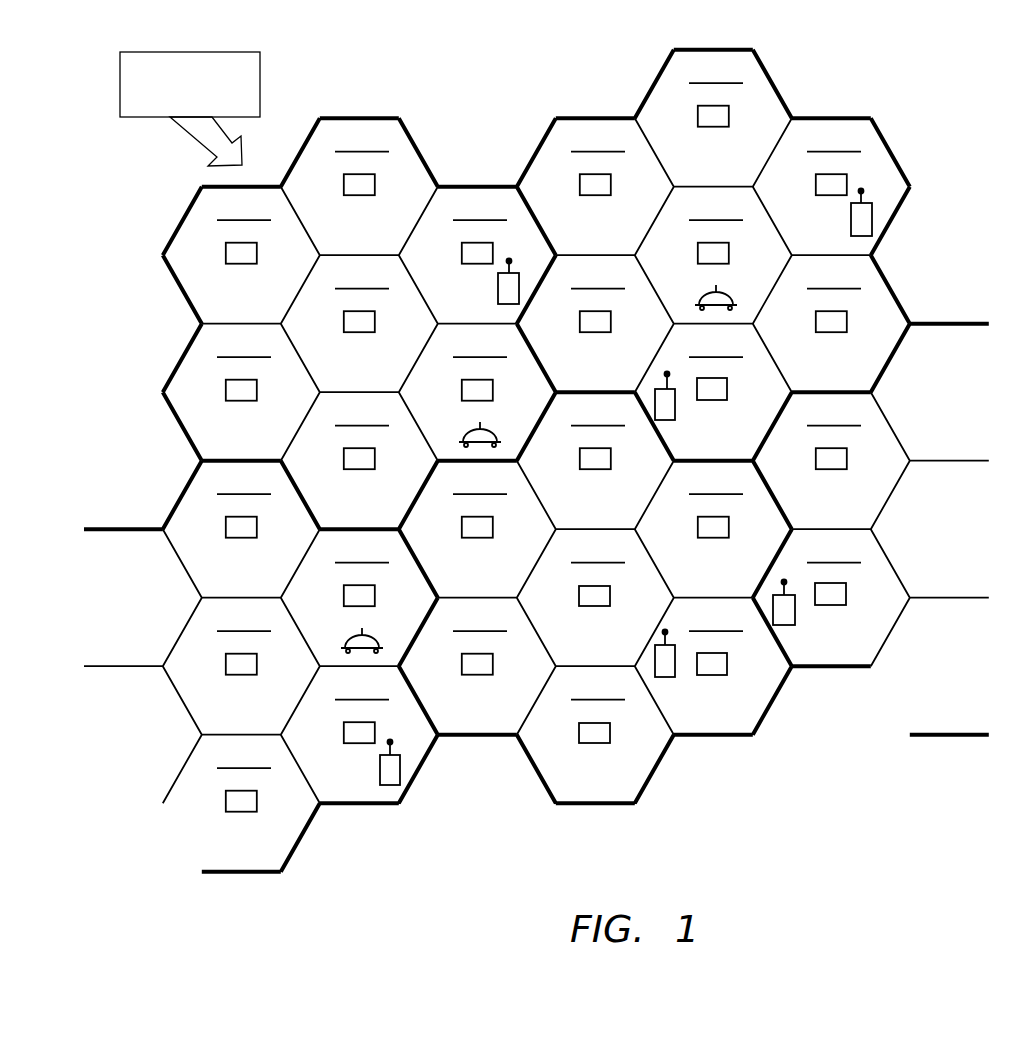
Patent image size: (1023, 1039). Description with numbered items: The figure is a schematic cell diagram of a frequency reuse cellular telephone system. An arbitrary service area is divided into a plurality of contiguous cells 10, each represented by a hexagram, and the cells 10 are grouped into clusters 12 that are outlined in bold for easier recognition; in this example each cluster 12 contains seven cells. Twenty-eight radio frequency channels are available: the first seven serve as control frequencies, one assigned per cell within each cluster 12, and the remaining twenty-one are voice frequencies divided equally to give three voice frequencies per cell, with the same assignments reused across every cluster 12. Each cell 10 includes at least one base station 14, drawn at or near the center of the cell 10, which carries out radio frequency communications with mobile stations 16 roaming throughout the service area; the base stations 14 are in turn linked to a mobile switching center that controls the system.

The cell 10 is at (125, 100).
The cluster 12 is at (437, 140).
The base station 14 is at (352, 333).
The mobile station 16 is at (513, 290).